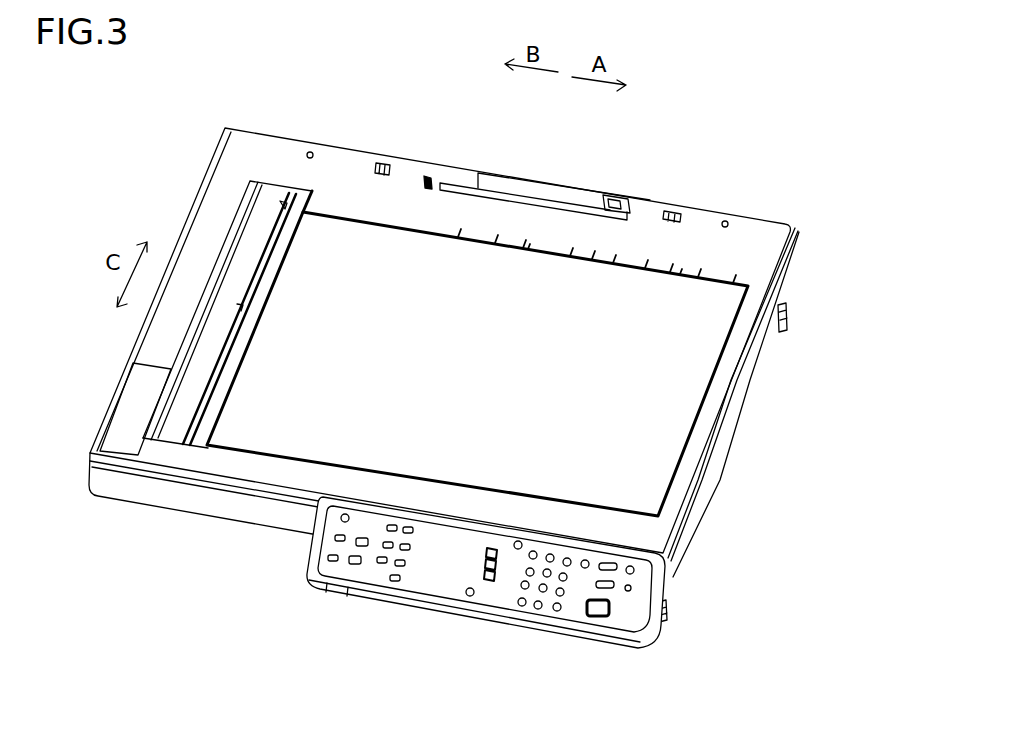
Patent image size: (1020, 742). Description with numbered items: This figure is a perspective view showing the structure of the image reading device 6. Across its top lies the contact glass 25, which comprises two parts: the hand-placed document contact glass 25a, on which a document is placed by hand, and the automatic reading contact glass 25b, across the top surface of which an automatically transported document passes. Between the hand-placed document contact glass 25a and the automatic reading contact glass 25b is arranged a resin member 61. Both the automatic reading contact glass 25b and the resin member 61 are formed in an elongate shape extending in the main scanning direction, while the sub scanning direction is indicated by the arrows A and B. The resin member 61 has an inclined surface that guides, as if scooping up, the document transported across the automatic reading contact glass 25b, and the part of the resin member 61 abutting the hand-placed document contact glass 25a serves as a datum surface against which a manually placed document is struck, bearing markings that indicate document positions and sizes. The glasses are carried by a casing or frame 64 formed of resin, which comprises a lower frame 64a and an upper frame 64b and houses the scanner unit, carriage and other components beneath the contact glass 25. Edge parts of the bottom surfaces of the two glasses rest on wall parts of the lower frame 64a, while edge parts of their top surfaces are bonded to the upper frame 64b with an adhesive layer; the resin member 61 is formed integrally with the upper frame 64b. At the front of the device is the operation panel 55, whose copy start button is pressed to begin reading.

The image reading device 6 is at (809, 173).
The contact glass 25 is at (299, 264).
The hand-placed document contact glass 25a is at (385, 245).
The automatic reading contact glass 25b is at (262, 190).
The resin member 61 is at (298, 202).
The casing (frame) 64 is at (848, 373).
The lower frame 64a is at (735, 410).
The upper frame 64b is at (727, 367).
The operation panel 55 is at (437, 583).